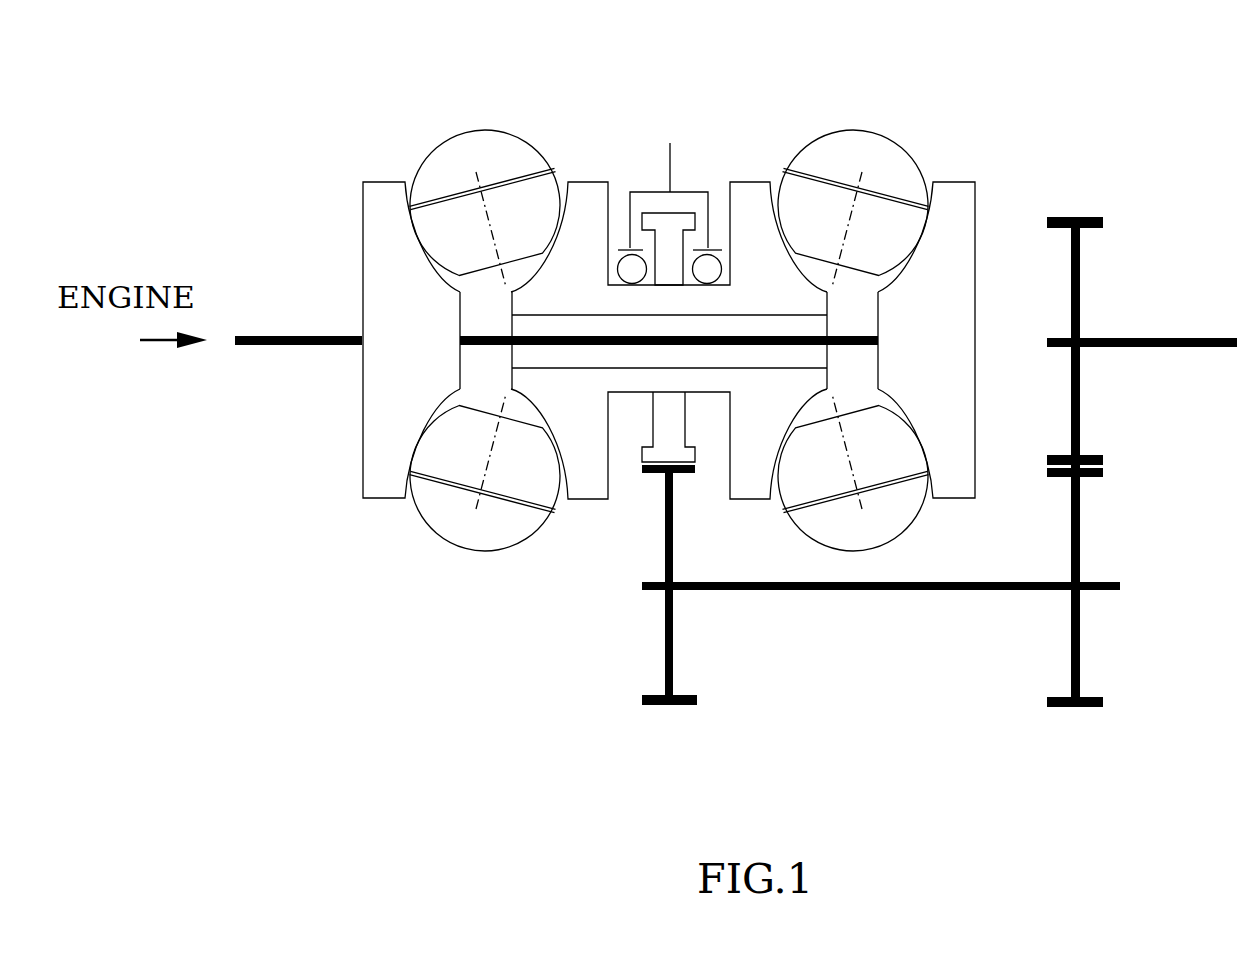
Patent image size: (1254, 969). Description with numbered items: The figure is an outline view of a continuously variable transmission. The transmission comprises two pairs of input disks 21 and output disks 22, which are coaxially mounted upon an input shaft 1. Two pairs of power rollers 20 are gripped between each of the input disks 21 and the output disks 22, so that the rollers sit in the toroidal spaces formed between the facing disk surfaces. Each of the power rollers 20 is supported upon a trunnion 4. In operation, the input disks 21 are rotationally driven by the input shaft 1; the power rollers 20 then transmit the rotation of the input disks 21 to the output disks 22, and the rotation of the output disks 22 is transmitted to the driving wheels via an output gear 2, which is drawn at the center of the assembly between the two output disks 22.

The input shaft 1 is at (500, 346).
The output gear 2 is at (655, 213).
The trunnion 4 is at (448, 153).
The power roller 20 is at (442, 256).
The input disk 21 is at (380, 182).
The output disk 22 is at (603, 183).